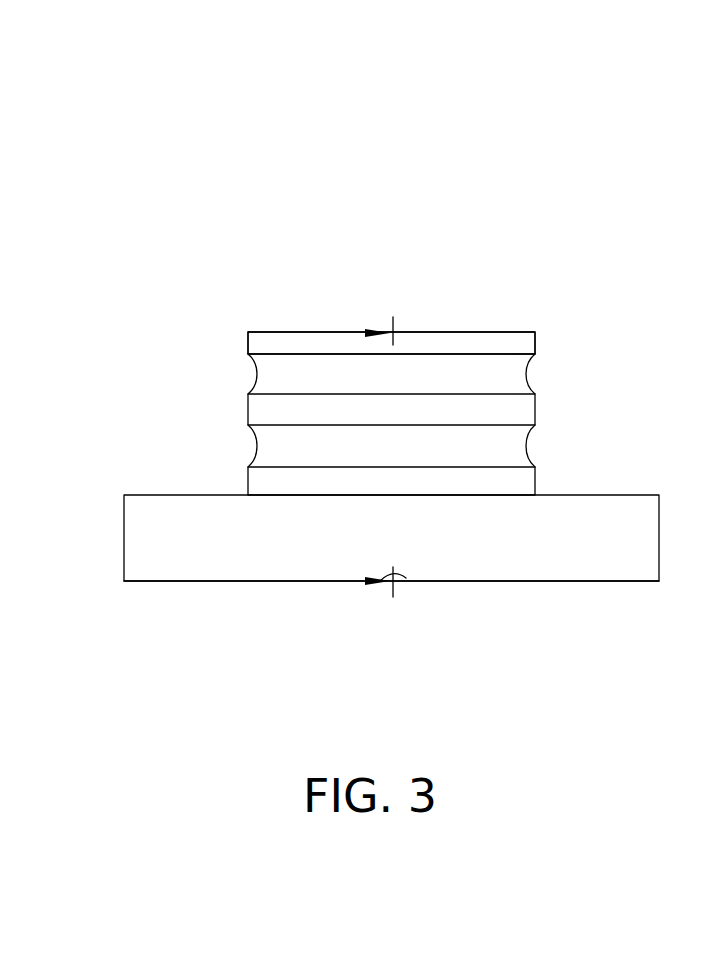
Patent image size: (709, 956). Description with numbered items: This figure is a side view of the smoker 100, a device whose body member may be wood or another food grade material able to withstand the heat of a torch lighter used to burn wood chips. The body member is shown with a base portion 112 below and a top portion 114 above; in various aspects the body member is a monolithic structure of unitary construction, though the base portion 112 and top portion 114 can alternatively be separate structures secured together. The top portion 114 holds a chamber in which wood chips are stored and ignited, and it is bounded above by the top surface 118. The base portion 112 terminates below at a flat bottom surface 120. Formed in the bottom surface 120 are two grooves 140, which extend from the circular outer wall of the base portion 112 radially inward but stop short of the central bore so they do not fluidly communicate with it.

The smoker 100 is at (428, 182).
The base portion 112 is at (177, 557).
The top portion 114 is at (503, 378).
The top surface 118 is at (490, 330).
The bottom surface 120 is at (517, 581).
The grooves 140 is at (406, 578).